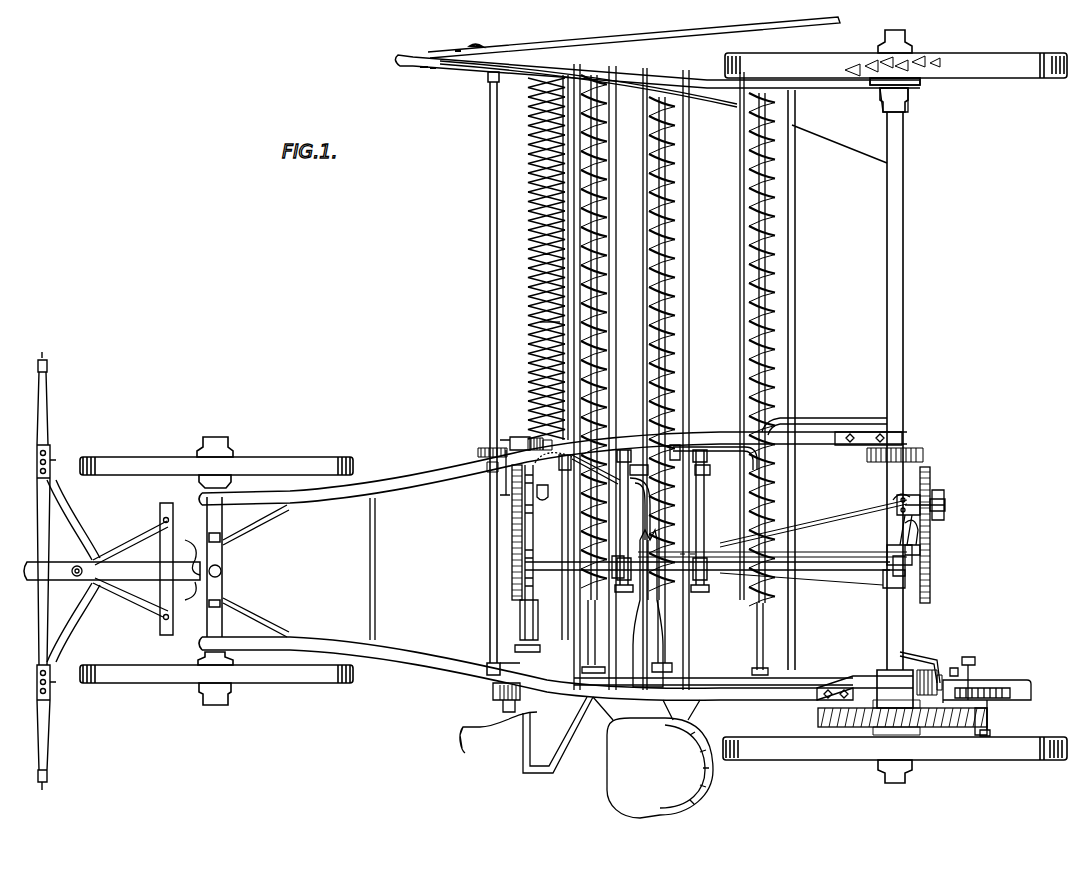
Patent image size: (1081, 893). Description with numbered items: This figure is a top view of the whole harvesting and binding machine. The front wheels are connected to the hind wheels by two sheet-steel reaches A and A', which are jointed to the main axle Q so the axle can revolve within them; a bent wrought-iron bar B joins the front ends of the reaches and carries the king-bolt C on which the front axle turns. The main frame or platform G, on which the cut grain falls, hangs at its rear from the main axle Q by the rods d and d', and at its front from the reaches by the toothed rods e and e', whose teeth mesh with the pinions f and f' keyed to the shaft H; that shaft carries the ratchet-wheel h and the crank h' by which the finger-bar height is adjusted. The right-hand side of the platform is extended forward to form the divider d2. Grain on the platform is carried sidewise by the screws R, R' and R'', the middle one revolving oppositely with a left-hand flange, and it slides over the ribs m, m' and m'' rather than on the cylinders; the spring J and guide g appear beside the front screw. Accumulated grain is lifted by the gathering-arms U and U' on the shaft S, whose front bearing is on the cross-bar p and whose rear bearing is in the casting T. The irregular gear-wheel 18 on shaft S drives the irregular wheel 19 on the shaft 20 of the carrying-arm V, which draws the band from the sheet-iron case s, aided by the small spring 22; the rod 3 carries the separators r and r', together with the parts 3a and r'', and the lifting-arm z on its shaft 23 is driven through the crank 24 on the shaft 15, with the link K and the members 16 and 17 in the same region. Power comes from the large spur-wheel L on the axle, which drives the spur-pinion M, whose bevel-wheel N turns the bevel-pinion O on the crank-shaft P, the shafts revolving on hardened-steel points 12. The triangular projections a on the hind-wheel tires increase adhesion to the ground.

The triangular projections a is at (894, 66).
The divider d2 is at (657, 62).
The suspension rod d' is at (901, 95).
The suspension rod d is at (692, 388).
The main axle Q is at (898, 410).
The main frame or platform G is at (837, 380).
The spring J is at (540, 257).
The spring guide g is at (540, 323).
The rib m is at (604, 377).
The rib m' is at (679, 379).
The rib m'' is at (782, 336).
The front screw R is at (604, 374).
The middle screw R' is at (679, 384).
The screw R'' is at (783, 384).
The reach A is at (556, 599).
The reach A' is at (553, 468).
The wrought-iron bar B is at (191, 567).
The king-bolt C is at (222, 571).
The crank-shaft P is at (713, 675).
The irregular wheel 19 is at (509, 532).
The irregular gear-wheel 18 is at (514, 552).
The suspending rod e' is at (504, 456).
The pinion f' is at (547, 438).
The carrying-arm shaft 20 is at (542, 492).
The carrying-arm V is at (559, 547).
The connecting rod K is at (575, 535).
The cross-bar p is at (528, 610).
The shaft H is at (536, 622).
The ratchet-wheel h is at (526, 653).
The suspending rod e is at (495, 687).
The pinion f is at (546, 729).
The crank h' is at (498, 733).
The gathering-arm shaft S is at (738, 569).
The lifting-arm z is at (738, 540).
The gathering-arm U is at (625, 521).
The gathering-arm U' is at (705, 521).
The small spring 22 is at (640, 507).
The separator r is at (639, 468).
The separator r' is at (704, 471).
The bracket 3a is at (676, 457).
The rod 3 is at (780, 438).
The sheet-iron case s is at (648, 608).
The rack 16 is at (930, 478).
The casting T is at (895, 527).
The crank 24 is at (915, 519).
The shaft 15 is at (937, 505).
The lifting-arm shaft 23 is at (912, 532).
The block 17 is at (930, 587).
The bearing r'' is at (894, 519).
The large spur-wheel L is at (894, 717).
The spur-pinion M is at (990, 720).
The bevel-pinion O is at (922, 668).
The large bevel-wheel N is at (1000, 688).
The hardened-steel points 12 is at (968, 699).